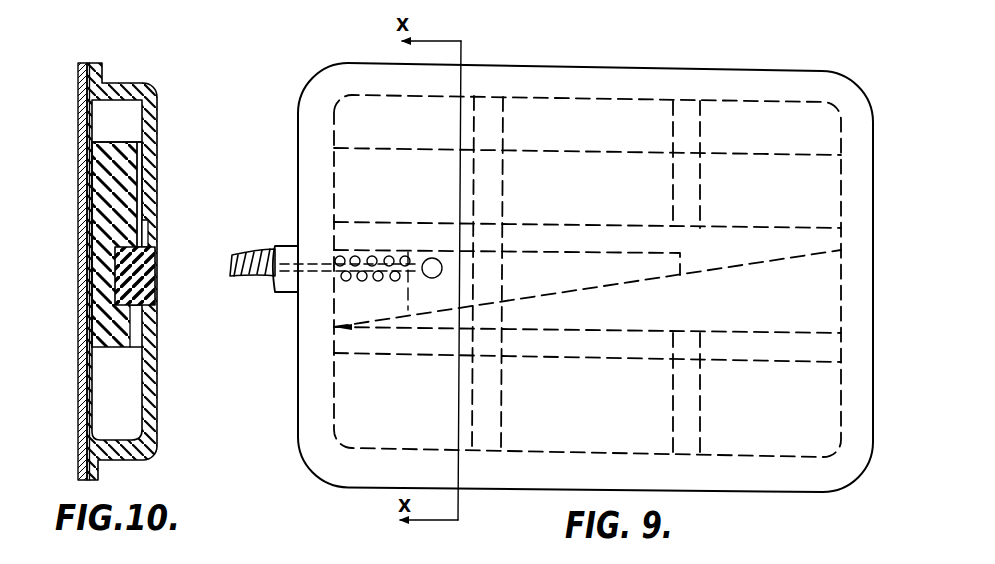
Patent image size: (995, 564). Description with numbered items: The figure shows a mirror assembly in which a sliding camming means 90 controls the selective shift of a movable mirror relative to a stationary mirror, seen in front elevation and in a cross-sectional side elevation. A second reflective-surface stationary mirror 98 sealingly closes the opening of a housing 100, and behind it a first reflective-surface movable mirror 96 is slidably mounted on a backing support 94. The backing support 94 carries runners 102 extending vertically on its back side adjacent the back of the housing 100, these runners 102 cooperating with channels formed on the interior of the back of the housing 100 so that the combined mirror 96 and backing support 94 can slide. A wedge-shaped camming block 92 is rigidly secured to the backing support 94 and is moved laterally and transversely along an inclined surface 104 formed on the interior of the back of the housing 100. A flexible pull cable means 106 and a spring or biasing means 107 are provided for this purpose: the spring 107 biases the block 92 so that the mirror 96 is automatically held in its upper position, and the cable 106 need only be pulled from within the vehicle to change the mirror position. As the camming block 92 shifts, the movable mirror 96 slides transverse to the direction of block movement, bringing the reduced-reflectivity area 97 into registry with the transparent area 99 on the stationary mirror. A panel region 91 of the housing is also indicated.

In FIG. 10, the sliding camming means 90 is at (160, 327).
In FIG. 9, the sliding camming means 90 is at (391, 235).
In FIG. 9, the panel section 91 is at (596, 318).
In FIG. 10, the wedge-shaped camming block 92 is at (142, 277).
In FIG. 9, the wedge-shaped camming block 92 is at (408, 288).
In FIG. 10, the backing support 94 is at (127, 158).
In FIG. 10, the movable mirror 96 is at (93, 140).
In FIG. 10, the reduced-reflectivity area 97 is at (98, 310).
In FIG. 10, the stationary mirror 98 is at (78, 117).
In FIG. 9, the stationary mirror 98 is at (420, 124).
In FIG. 10, the transparent area 99 is at (85, 210).
In FIG. 10, the housing 100 is at (122, 85).
In FIG. 9, the housing 100 is at (645, 98).
In FIG. 10, the runners 102 is at (138, 192).
In FIG. 9, the runners 102 is at (480, 146).
In FIG. 10, the inclined surface 104 is at (145, 233).
In FIG. 9, the inclined surface 104 is at (762, 259).
In FIG. 9, the flexible pull cable means 106 is at (257, 250).
In FIG. 9, the spring or biasing means 107 is at (343, 284).